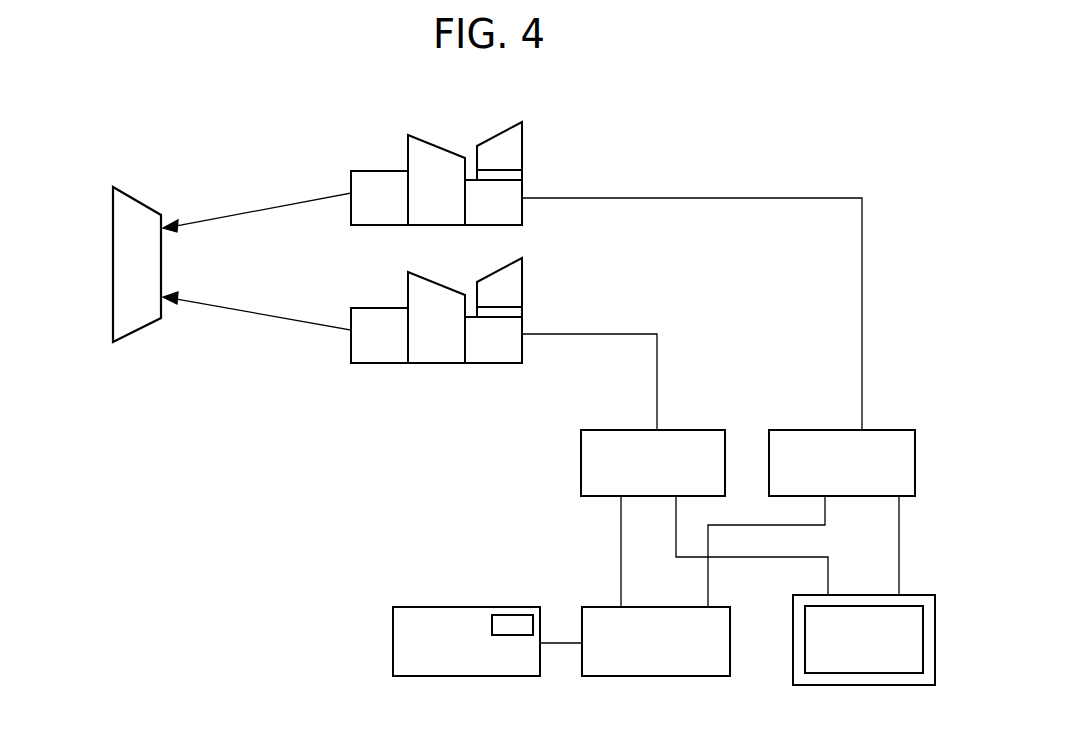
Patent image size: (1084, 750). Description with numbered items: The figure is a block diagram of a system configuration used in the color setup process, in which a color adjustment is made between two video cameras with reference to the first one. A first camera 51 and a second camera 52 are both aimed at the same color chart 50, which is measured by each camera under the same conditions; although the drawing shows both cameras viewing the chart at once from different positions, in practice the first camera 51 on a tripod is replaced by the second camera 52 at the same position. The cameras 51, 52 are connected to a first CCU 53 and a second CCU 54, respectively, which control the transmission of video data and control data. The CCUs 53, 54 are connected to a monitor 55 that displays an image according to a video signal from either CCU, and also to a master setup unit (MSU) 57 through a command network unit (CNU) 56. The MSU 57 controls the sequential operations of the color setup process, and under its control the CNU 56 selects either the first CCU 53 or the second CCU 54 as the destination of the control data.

The color chart 50 is at (153, 213).
The camera (1) 51 is at (453, 132).
The camera (2) 52 is at (466, 380).
The CCU (1) 53 is at (890, 429).
The CCU (2) 54 is at (705, 429).
The monitor 55 is at (918, 594).
The command network unit (CNU) 56 is at (593, 606).
The master setup unit (MSU) 57 is at (512, 606).